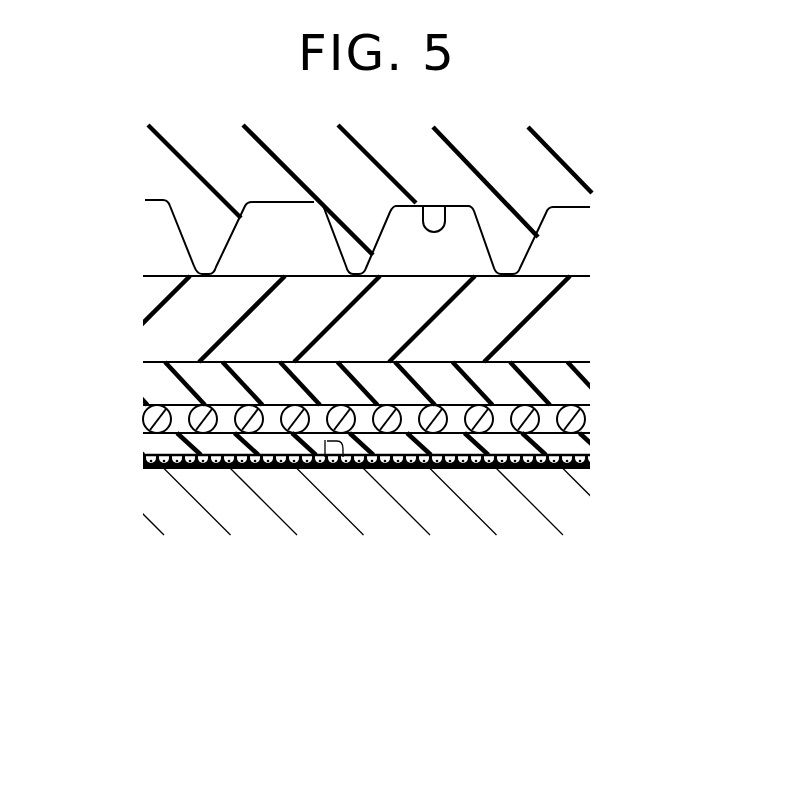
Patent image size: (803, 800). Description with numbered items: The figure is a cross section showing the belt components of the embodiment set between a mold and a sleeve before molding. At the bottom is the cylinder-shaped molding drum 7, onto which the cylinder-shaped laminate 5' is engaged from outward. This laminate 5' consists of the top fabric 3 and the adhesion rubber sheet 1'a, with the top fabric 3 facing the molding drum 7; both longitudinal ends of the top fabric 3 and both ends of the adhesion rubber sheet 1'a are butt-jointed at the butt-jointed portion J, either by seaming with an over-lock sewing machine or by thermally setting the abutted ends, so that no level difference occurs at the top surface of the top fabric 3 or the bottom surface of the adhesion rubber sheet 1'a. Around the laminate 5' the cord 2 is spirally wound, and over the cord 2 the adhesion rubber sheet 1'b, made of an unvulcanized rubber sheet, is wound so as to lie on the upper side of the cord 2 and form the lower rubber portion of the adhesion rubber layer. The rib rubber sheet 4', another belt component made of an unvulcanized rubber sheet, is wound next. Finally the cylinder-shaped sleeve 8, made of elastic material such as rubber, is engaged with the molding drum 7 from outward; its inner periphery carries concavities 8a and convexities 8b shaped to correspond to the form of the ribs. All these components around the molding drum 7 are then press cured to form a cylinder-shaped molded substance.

The sleeve 8 is at (559, 184).
The concavity 8a is at (427, 203).
The convexity 8b is at (373, 265).
The rib rubber sheet 4' is at (328, 319).
The adhesion rubber sheet 1'b is at (335, 381).
The cord 2 is at (143, 425).
The adhesion rubber sheet 1'a is at (401, 447).
The top fabric 3 is at (586, 466).
The cylinder-shaped laminate 5' is at (414, 463).
The molding drum 7 is at (563, 503).
The butt-jointed portion J is at (344, 457).